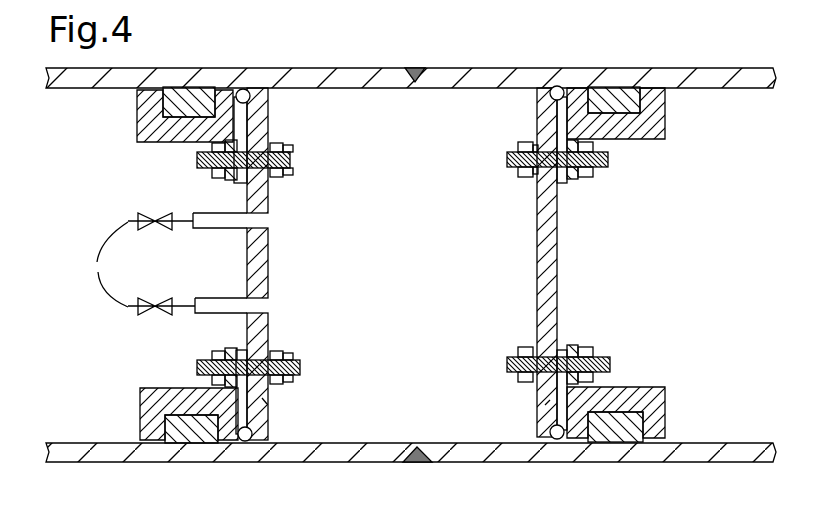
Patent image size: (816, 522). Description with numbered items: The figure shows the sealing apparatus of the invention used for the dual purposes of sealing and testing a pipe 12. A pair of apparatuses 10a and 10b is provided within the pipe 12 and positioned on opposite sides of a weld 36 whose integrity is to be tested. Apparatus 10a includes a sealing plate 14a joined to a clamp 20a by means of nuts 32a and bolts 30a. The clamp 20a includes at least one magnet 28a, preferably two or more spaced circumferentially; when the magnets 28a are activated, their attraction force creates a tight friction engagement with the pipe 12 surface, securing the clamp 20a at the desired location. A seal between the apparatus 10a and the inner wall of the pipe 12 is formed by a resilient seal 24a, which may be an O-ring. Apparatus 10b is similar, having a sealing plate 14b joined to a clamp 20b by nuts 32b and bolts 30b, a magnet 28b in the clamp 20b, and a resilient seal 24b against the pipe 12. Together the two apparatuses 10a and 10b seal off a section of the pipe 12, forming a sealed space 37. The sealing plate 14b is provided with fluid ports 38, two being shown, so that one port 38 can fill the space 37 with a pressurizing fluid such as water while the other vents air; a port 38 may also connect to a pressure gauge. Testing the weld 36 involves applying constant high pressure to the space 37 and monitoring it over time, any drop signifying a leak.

The pipe 12 is at (718, 70).
The apparatus 10a is at (633, 193).
The apparatus 10b is at (124, 160).
The sealing plate 14a is at (545, 405).
The sealing plate 14b is at (266, 404).
The clamp 20a is at (660, 124).
The clamp 20b is at (145, 121).
The resilient seal 24a is at (557, 87).
The resilient seal 24b is at (248, 90).
The magnet 28a is at (612, 90).
The magnet 28b is at (194, 94).
The bolt 30a is at (507, 158).
The bolt 30b is at (197, 160).
The nut 32a is at (524, 178).
The nut 32b is at (218, 177).
The weld 36 is at (416, 67).
The sealed space 37 is at (396, 282).
The fluid port 38 is at (131, 264).